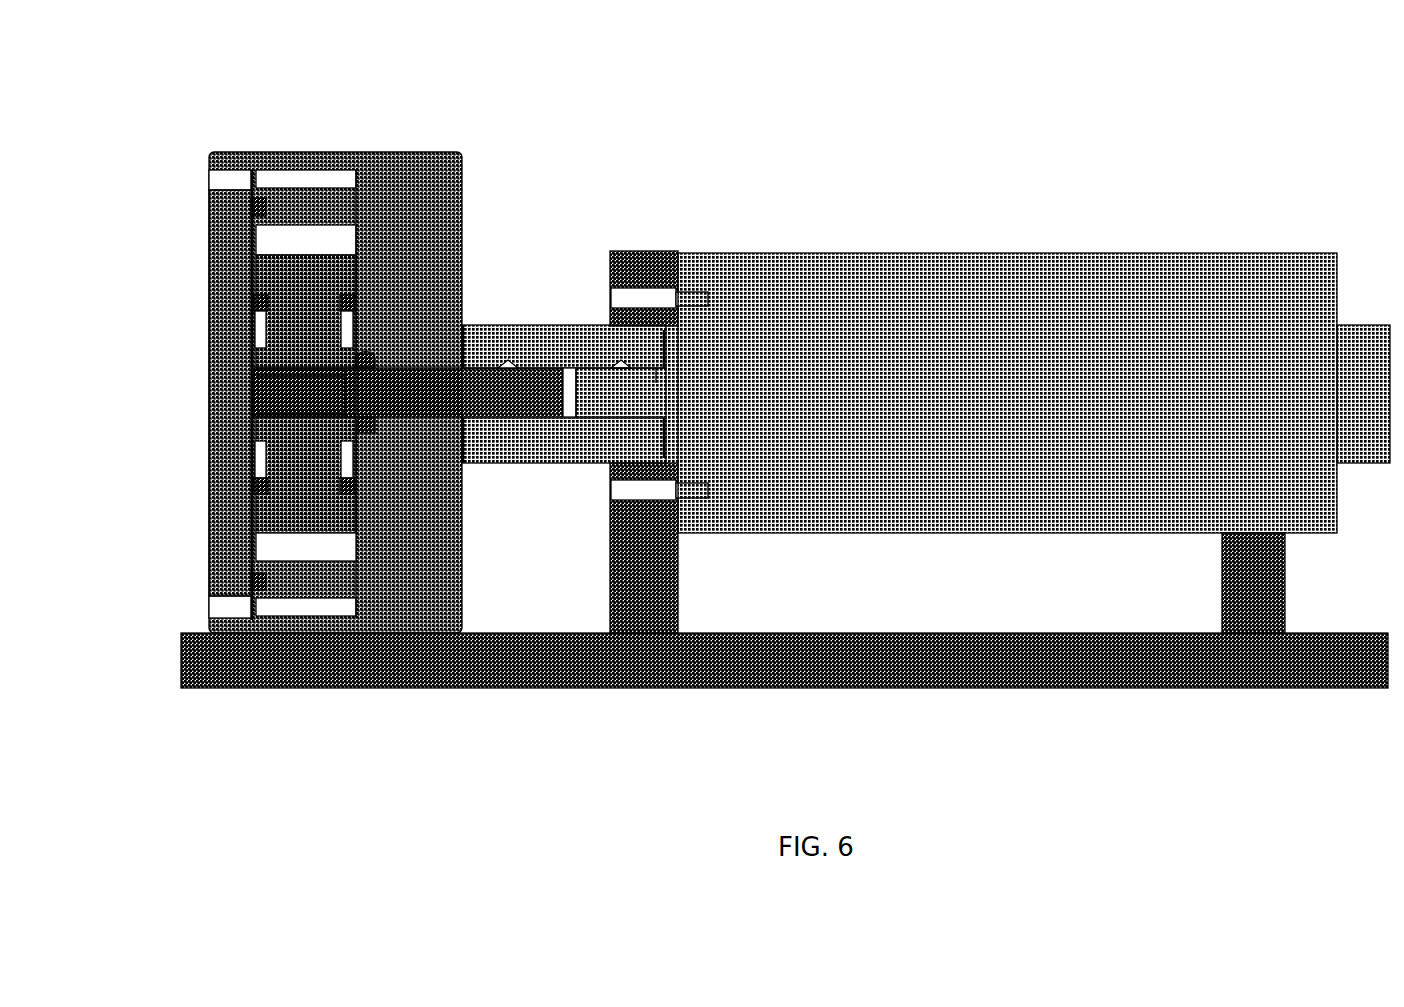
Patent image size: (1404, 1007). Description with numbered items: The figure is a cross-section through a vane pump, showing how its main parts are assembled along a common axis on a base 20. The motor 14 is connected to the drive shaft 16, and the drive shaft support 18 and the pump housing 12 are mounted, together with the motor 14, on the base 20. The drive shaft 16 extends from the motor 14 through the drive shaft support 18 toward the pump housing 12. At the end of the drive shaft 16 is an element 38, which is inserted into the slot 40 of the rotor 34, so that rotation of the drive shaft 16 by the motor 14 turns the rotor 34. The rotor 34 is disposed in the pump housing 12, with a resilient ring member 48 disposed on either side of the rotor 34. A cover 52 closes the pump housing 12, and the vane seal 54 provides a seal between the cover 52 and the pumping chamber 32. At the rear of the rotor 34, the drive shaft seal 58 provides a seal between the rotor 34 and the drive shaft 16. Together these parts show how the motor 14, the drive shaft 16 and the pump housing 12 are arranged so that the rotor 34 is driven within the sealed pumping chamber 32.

The pump housing 12 is at (405, 145).
The motor 14 is at (835, 245).
The drive shaft 16 is at (505, 360).
The drive shaft support 18 is at (625, 245).
The base 20 is at (587, 680).
The pumping chamber 32 is at (323, 233).
The rotor 34 is at (290, 527).
The element 38 is at (245, 387).
The slot 40 is at (292, 360).
The resilient ring member 48 is at (250, 287).
The cover 52 is at (198, 385).
The vane seal 54 is at (248, 198).
The drive shaft seal 58 is at (367, 353).